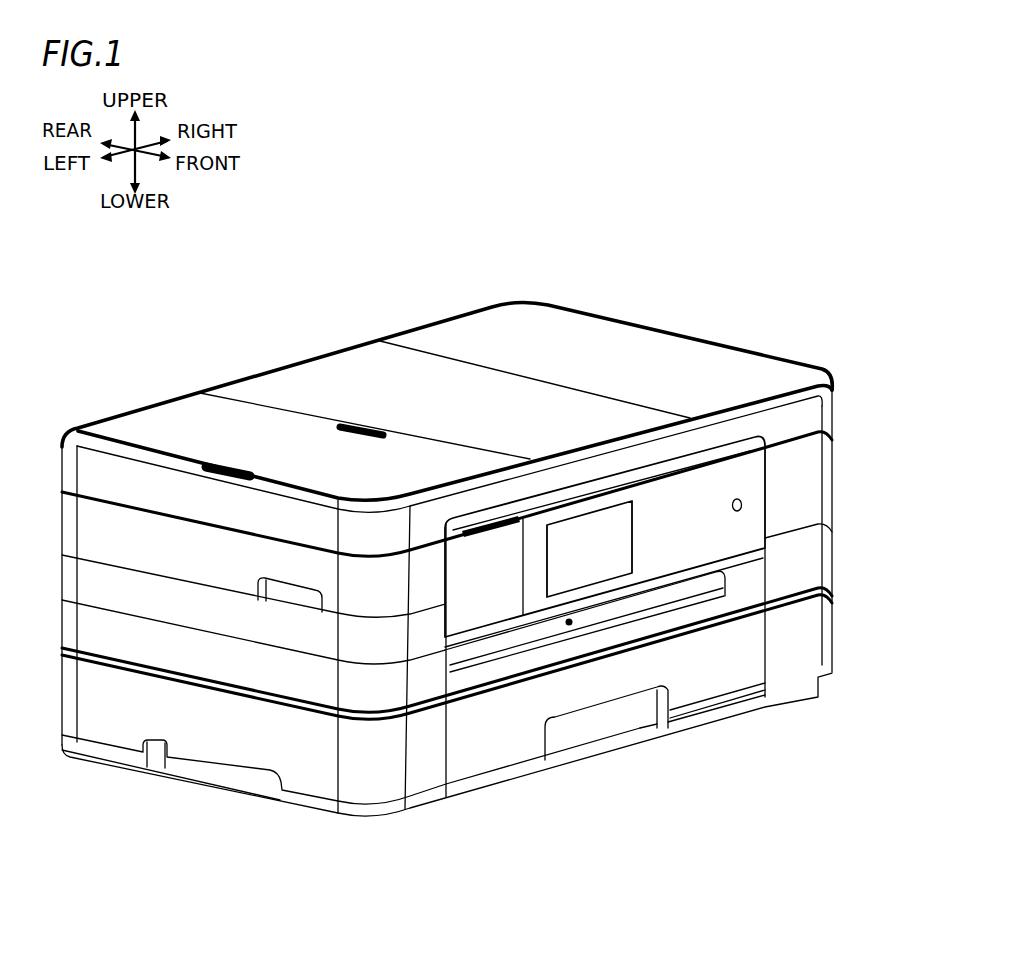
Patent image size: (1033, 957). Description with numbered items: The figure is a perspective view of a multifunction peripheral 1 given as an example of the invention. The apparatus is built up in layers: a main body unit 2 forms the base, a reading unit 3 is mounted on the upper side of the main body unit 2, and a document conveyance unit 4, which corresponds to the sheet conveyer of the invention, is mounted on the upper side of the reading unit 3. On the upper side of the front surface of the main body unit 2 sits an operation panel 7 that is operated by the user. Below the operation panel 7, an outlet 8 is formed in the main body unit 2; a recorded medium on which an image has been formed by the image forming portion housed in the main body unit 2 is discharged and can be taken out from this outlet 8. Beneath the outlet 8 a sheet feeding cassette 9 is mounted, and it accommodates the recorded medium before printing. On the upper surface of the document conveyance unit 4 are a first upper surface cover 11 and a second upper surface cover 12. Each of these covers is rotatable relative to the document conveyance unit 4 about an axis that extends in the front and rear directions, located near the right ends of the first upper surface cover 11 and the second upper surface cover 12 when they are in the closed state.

The multifunction peripheral 1 is at (654, 299).
The main body unit 2 is at (273, 742).
The reading unit 3 is at (130, 522).
The document conveyance unit 4 is at (153, 488).
The operation panel 7 is at (683, 507).
The outlet 8 is at (572, 625).
The sheet feeding cassette 9 is at (710, 682).
The first upper surface cover 11 is at (364, 395).
The second upper surface cover 12 is at (252, 430).